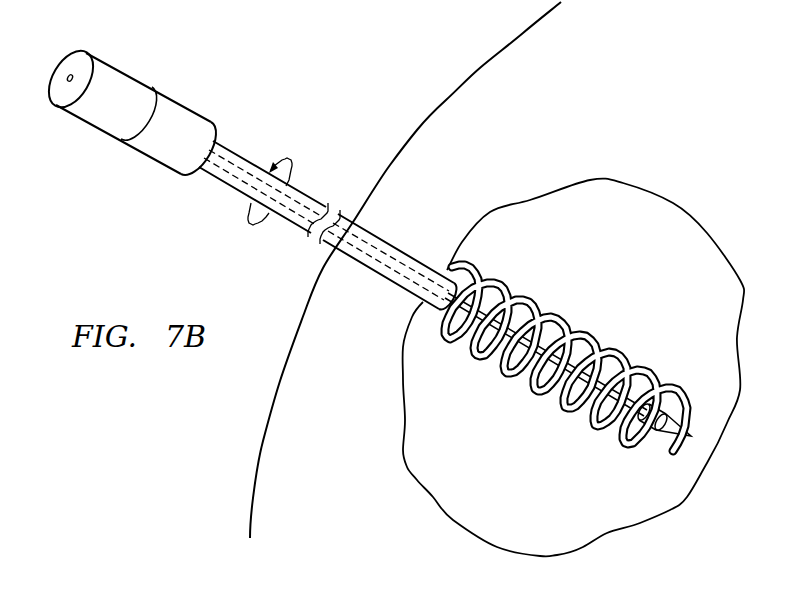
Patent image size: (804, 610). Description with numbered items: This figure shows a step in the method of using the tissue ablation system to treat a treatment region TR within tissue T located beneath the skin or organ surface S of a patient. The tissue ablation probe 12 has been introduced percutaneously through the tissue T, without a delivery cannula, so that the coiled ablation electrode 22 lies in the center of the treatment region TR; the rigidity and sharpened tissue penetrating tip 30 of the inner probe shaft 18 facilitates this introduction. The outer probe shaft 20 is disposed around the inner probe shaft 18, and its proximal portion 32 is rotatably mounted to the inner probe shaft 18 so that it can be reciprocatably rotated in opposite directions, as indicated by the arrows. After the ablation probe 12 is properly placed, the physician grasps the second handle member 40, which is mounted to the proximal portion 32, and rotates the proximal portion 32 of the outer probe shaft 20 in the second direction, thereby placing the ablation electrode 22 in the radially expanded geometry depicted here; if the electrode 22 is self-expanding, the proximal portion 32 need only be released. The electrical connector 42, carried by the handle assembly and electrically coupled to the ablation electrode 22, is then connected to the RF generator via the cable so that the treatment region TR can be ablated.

The tissue ablation probe 12 is at (440, 236).
The inner probe shaft 18 is at (390, 252).
The outer probe shaft 20 is at (376, 268).
The coiled ablation electrode 22 is at (500, 373).
The tissue penetrating tip 30 is at (693, 433).
The proximal portion 32 is at (241, 157).
The second handle member 40 is at (172, 98).
The electrical connector 42 is at (67, 77).
The skin or organ surface S is at (405, 140).
The tissue T is at (491, 117).
The treatment region TR is at (574, 368).